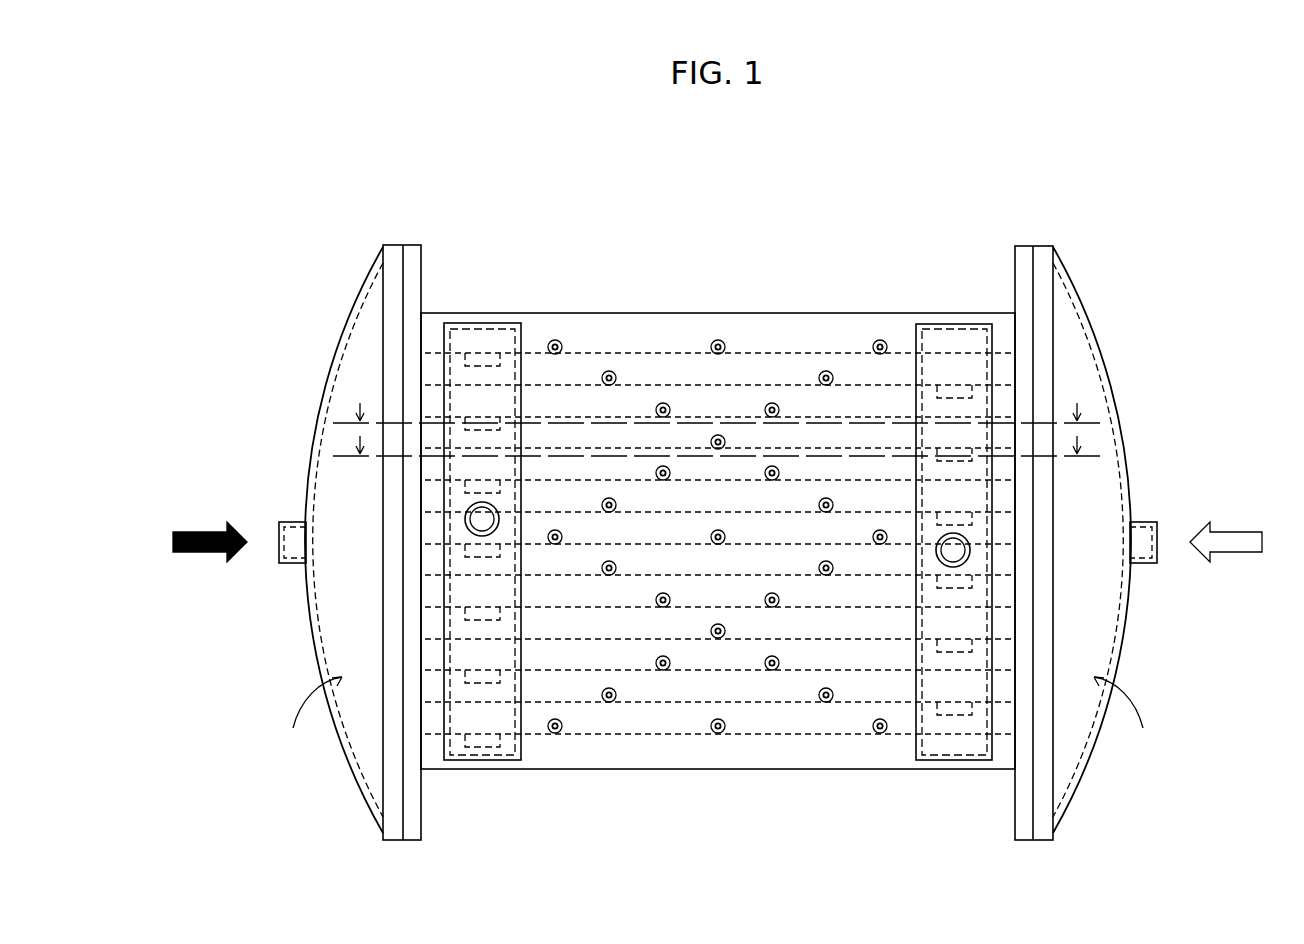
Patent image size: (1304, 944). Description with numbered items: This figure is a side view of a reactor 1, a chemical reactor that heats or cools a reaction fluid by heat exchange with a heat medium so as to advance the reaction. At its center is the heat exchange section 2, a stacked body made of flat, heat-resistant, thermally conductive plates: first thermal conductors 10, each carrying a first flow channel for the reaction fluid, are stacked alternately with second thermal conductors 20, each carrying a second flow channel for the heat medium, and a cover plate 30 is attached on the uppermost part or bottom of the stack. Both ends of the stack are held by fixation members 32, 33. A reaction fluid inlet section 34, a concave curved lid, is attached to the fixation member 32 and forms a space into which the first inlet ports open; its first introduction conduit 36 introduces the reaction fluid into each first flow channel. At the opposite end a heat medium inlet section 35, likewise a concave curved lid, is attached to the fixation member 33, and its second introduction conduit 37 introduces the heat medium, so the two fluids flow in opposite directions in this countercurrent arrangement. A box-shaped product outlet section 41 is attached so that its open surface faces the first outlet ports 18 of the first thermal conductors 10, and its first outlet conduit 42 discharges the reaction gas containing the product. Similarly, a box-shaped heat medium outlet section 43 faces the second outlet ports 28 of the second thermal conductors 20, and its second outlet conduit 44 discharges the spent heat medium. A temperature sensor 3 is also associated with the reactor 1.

The reactor 1 is at (893, 182).
The heat exchange section 2 is at (713, 313).
The temperature sensor 3 is at (724, 735).
The first thermal conductor 10 is at (645, 467).
The first outlet port 18 is at (957, 458).
The second thermal conductor 20 is at (605, 430).
The second outlet port 28 is at (484, 428).
The cover plate 30 is at (778, 332).
The fixation member 32 is at (403, 252).
The fixation member 33 is at (1023, 252).
The reaction fluid inlet section 34 is at (365, 328).
The heat medium inlet section 35 is at (1070, 328).
The first introduction conduit 36 is at (302, 523).
The second introduction conduit 37 is at (1134, 523).
The product outlet section 41 is at (955, 323).
The first outlet conduit 42 is at (940, 565).
The heat medium outlet section 43 is at (482, 322).
The second outlet conduit 44 is at (492, 535).